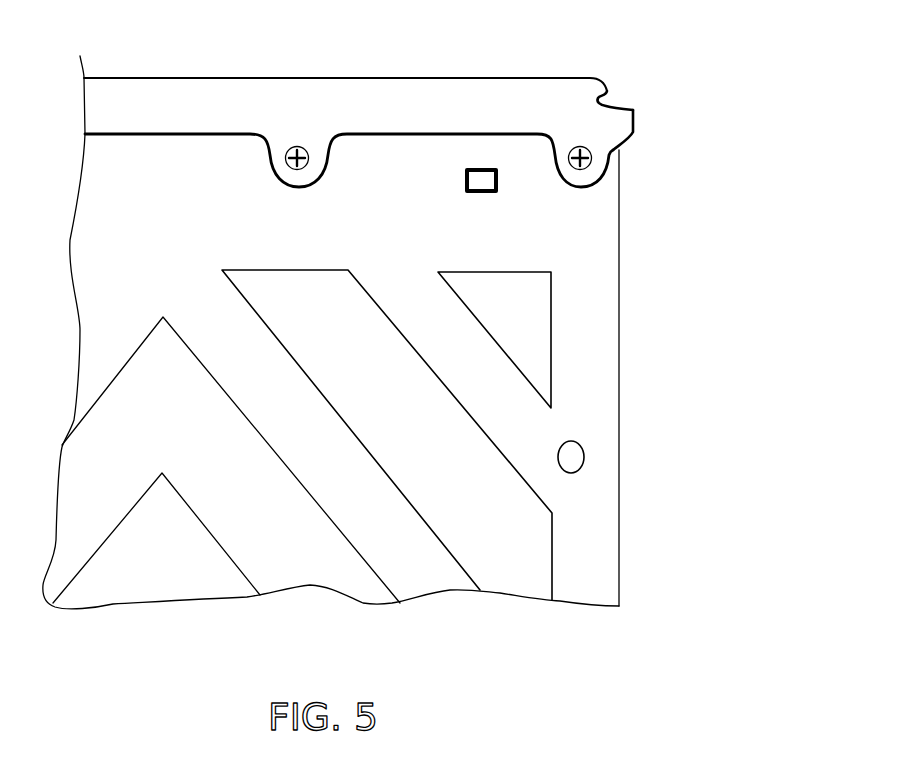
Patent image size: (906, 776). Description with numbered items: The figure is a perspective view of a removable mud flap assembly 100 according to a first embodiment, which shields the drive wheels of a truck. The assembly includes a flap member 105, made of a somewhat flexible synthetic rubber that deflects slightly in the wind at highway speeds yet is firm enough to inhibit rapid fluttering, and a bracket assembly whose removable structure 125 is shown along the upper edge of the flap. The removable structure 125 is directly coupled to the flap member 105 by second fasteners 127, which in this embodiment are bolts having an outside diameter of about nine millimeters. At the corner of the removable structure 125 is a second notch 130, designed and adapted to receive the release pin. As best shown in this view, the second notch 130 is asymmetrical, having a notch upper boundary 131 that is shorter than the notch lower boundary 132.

The removable mud flap assembly 100 is at (668, 334).
The flap member 105 is at (619, 462).
The removable structure 125 is at (472, 78).
The second fasteners 127 is at (300, 171).
The second notch 130 is at (633, 98).
The notch upper boundary 131 is at (622, 94).
The notch lower boundary 132 is at (637, 110).